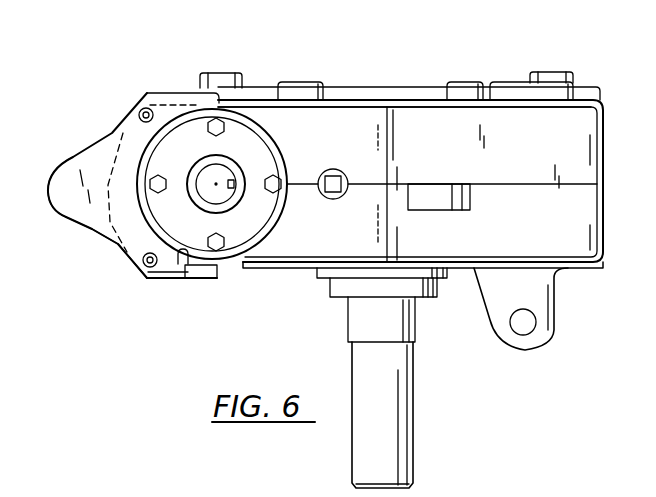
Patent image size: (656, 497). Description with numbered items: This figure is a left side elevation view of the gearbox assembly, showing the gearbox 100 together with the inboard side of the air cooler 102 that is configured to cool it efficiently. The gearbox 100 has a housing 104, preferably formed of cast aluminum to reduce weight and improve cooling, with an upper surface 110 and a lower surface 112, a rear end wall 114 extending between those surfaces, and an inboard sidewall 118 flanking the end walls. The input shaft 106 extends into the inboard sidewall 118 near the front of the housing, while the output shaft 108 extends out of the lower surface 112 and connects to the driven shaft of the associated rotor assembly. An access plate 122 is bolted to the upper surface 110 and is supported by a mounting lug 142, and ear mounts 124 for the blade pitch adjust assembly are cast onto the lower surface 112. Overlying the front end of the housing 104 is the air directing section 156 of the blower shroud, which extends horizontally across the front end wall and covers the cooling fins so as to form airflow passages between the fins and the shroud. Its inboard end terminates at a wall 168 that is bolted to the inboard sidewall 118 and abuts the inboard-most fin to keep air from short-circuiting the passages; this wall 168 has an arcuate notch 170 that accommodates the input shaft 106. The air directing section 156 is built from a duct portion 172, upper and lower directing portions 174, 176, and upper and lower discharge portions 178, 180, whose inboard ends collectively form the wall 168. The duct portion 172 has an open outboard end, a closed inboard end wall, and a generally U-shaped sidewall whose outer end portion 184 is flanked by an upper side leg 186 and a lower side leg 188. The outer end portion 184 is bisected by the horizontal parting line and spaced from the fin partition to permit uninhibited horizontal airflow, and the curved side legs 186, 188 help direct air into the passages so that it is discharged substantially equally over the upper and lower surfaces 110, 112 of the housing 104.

The gearbox 100 is at (498, 83).
The air cooler 102 is at (147, 278).
The housing 104 is at (597, 231).
The input shaft 106 is at (230, 175).
The output shaft 108 is at (405, 392).
The upper surface 110 is at (415, 97).
The lower surface 112 is at (284, 269).
The rear end wall 114 is at (598, 157).
The inboard sidewall 118 is at (348, 118).
The access plate 122 is at (516, 83).
The ear mounts 124 is at (540, 313).
The mounting lug 142 is at (195, 83).
The air directing section 156 is at (95, 140).
The wall 168 is at (132, 263).
The arcuate notch 170 is at (183, 262).
The duct portion 172 is at (73, 221).
The upper directing portion 174 is at (138, 104).
The lower directing portion 176 is at (122, 253).
The upper discharge portion 178 is at (163, 92).
The lower discharge portion 180 is at (200, 273).
The outer end portion 184 is at (52, 193).
The upper side leg 186 is at (73, 159).
The lower side leg 188 is at (88, 240).